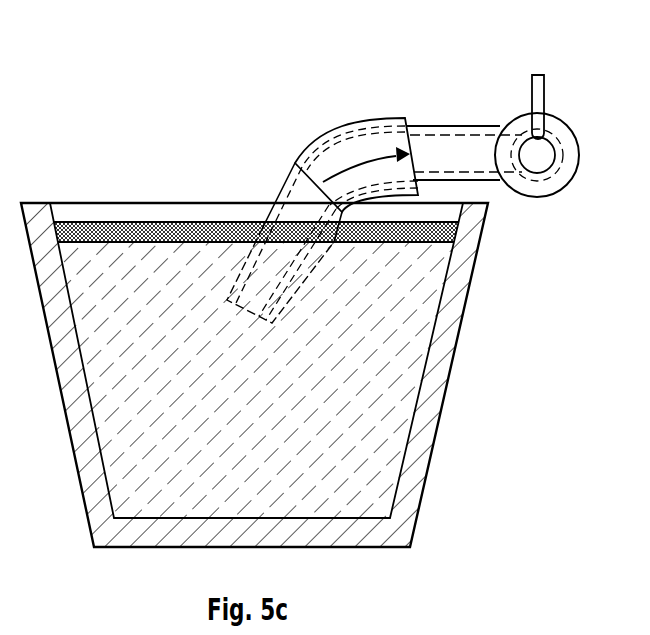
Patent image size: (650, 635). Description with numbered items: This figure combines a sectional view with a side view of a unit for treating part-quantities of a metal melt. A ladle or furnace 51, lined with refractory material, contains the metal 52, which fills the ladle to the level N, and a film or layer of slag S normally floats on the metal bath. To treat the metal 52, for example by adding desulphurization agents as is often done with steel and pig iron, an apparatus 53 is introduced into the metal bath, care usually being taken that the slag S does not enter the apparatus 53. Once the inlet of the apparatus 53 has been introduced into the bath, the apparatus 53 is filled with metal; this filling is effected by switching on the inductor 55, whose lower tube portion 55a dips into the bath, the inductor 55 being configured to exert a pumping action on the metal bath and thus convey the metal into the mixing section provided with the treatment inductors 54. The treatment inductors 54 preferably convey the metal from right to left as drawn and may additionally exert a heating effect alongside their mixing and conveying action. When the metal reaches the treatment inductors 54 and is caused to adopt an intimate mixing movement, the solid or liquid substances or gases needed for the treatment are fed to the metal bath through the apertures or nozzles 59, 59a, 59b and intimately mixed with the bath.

The ladle or furnace 51 is at (455, 302).
The metal 52 is at (403, 395).
The level N is at (453, 240).
The slag film or layer S is at (113, 228).
The apparatus 53 is at (458, 128).
The treatment inductors 54 is at (562, 128).
The inductor 55 is at (332, 138).
The nozzle tip 55a is at (278, 197).
The aperture or nozzle 59 is at (521, 73).
The aperture or nozzle 59a is at (538, 107).
The aperture or nozzle 59b is at (532, 75).